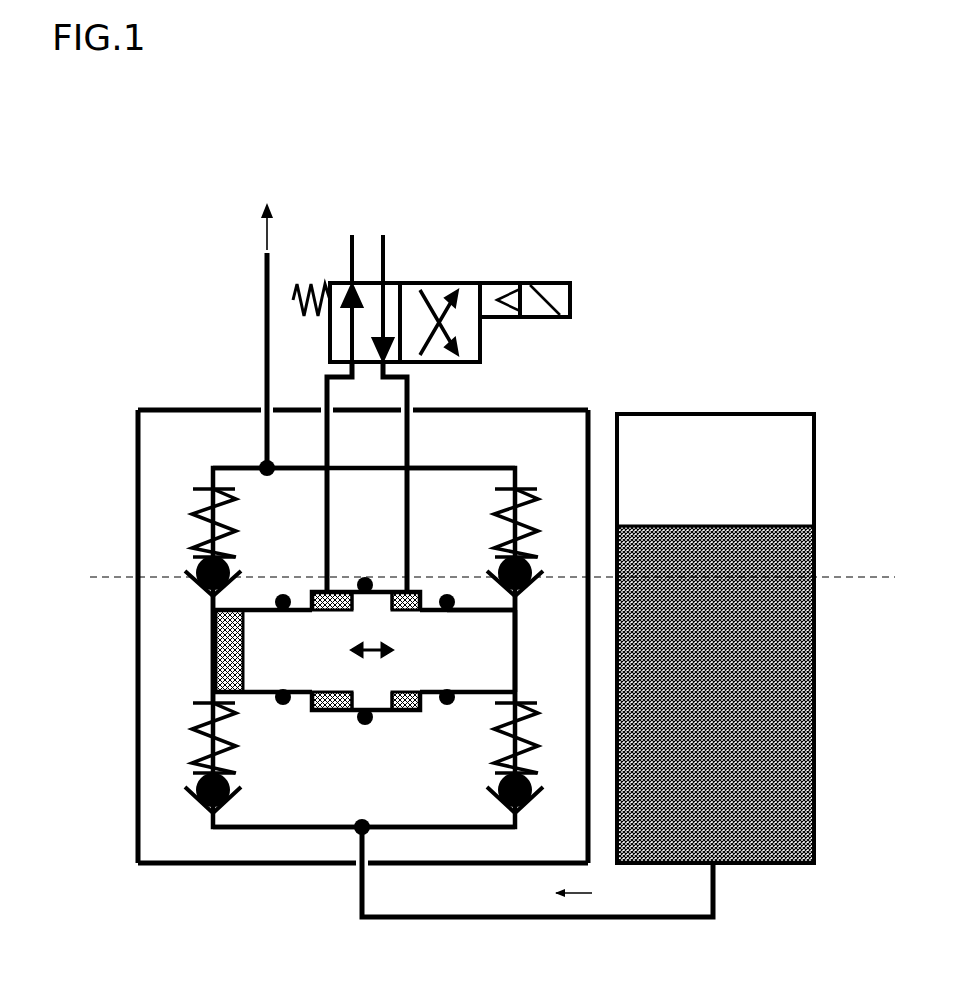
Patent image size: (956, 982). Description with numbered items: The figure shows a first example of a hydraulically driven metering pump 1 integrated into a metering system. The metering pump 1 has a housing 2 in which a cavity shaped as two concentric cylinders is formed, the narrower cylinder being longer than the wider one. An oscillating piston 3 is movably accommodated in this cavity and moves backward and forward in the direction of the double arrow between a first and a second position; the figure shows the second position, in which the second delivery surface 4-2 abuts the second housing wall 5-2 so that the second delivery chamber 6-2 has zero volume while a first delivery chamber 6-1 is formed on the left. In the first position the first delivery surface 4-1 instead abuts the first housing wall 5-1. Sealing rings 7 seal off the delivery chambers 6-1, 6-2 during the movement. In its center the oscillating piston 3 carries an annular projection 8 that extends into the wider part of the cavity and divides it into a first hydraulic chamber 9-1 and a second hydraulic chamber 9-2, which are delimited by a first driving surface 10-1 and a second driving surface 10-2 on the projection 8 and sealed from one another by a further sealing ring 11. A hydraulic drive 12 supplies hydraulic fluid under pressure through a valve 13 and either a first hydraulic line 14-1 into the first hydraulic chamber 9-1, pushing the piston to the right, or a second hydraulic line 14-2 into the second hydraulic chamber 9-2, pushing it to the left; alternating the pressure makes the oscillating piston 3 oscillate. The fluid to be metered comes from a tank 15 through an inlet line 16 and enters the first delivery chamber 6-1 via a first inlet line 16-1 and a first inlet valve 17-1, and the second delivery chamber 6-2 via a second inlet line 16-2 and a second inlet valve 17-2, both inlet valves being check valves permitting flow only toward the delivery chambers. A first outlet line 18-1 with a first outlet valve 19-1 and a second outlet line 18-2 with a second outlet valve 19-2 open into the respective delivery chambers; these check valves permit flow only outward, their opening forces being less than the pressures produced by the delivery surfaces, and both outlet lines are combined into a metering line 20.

The metering pump 1 is at (100, 406).
The housing 2 is at (160, 625).
The oscillating piston 3 is at (313, 662).
The first delivery surface 4-1 is at (212, 672).
The second delivery surface 4-2 is at (520, 680).
The first housing wall 5-1 is at (208, 645).
The second housing wall 5-2 is at (522, 616).
The first delivery chamber 6-1 is at (212, 620).
The second delivery chamber 6-2 is at (522, 640).
The sealing rings 7 is at (282, 704).
The annular projection 8 is at (386, 603).
The first hydraulic chamber 9-1 is at (315, 712).
The second hydraulic chamber 9-2 is at (398, 712).
The first driving surface 10-1 is at (310, 591).
The second driving surface 10-2 is at (417, 591).
The sealing ring 11 is at (360, 580).
The hydraulic drive 12 is at (417, 221).
The valve 13 is at (448, 273).
The first hydraulic line 14-1 is at (324, 517).
The second hydraulic line 14-2 is at (412, 503).
The tank 15 is at (815, 842).
The inlet line 16 is at (572, 919).
The first inlet line 16-1 is at (290, 830).
The second inlet line 16-2 is at (482, 830).
The first inlet valve 17-1 is at (188, 758).
The second inlet valve 17-2 is at (490, 741).
The first outlet line 18-1 is at (232, 466).
The second outlet line 18-2 is at (470, 466).
The first outlet valve 19-1 is at (190, 508).
The second outlet valve 19-2 is at (530, 527).
The metering line 20 is at (262, 335).